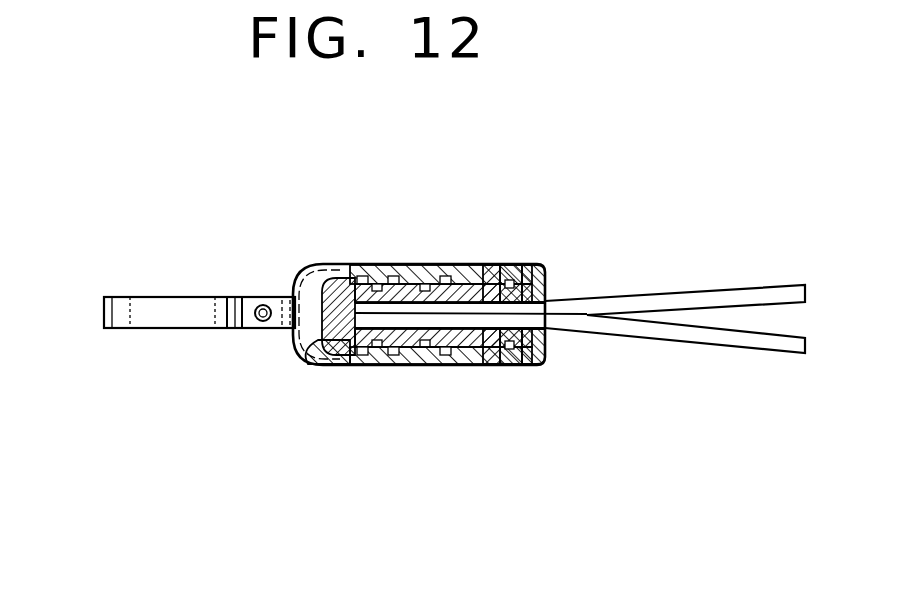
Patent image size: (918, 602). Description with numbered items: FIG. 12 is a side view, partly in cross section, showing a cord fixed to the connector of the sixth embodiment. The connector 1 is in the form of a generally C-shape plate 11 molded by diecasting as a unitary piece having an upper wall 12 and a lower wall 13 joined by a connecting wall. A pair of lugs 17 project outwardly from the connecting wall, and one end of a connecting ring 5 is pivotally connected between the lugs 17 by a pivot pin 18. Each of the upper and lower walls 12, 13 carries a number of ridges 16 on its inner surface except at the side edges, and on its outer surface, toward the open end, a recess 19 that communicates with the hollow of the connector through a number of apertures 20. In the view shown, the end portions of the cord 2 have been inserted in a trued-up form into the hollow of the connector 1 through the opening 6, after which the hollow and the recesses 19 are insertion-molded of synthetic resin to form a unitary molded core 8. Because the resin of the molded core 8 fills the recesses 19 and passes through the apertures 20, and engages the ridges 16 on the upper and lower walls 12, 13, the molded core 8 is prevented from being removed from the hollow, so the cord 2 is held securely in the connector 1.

The connector 1 is at (327, 243).
The cord 2 is at (676, 292).
The connecting ring 5 is at (170, 297).
The opening 6 is at (551, 340).
The molded core 8 is at (368, 363).
The C-shape plate 11 is at (387, 265).
The upper wall 12 is at (433, 265).
The lower wall 13 is at (398, 353).
The ridge 16 is at (393, 364).
The lug 17 is at (283, 328).
The pivot pin 18 is at (258, 297).
The recess 19 is at (512, 265).
The aperture 20 is at (489, 265).